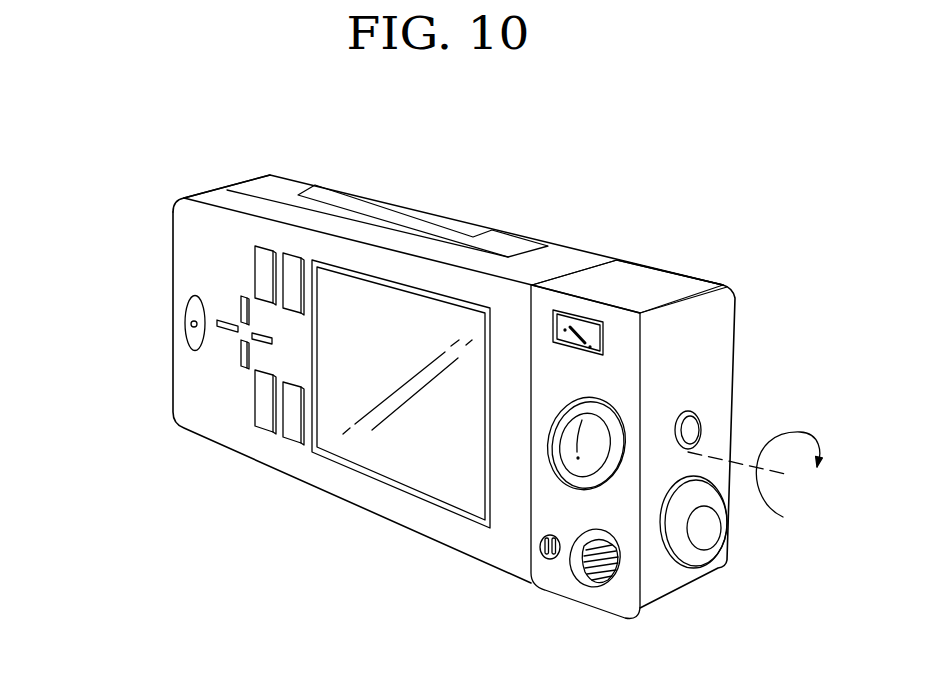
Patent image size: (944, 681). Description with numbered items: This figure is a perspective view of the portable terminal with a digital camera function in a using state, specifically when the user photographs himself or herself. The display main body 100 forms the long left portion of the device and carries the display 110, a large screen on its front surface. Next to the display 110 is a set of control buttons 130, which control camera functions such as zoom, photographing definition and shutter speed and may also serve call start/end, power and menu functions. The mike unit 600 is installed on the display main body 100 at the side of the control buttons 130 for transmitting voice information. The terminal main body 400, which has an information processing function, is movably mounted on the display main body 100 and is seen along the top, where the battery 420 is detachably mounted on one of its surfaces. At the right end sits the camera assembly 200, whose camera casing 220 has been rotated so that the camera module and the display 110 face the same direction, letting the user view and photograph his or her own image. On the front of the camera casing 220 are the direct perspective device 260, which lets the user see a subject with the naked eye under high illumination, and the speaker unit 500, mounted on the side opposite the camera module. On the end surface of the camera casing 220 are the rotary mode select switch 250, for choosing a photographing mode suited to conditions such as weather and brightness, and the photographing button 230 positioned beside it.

The display main body 100 is at (212, 172).
The terminal main body 400 is at (267, 172).
The battery 420 is at (422, 218).
The camera assembly 200 is at (720, 268).
The camera casing 220 is at (648, 282).
The display 110 is at (378, 442).
The control buttons 130 is at (243, 369).
The mike unit 600 is at (182, 328).
The direct perspective device 260 is at (553, 350).
The speaker unit 500 is at (541, 478).
The photographing button 230 is at (701, 428).
The mode select switch 250 is at (705, 530).